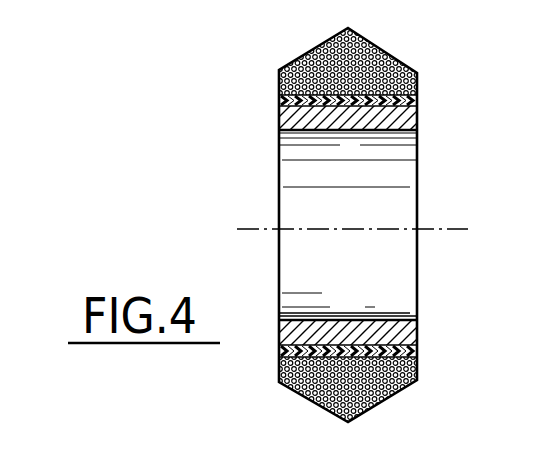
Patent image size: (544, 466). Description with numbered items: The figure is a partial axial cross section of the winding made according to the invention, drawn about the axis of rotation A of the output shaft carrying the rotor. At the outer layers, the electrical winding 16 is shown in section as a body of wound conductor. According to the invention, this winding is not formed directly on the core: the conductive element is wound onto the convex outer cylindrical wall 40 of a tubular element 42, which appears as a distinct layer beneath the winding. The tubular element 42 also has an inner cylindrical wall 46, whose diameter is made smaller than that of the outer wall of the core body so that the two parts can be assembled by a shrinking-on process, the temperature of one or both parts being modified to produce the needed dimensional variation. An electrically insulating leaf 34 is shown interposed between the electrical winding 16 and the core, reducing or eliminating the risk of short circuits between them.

The electrical winding 16 is at (395, 54).
The convex outer cylindrical wall 40 is at (412, 122).
The tubular element 42 is at (370, 128).
The inner cylindrical wall 46 is at (318, 131).
The axis of rotation A is at (255, 228).
The electrically insulating leaf 34 is at (417, 334).